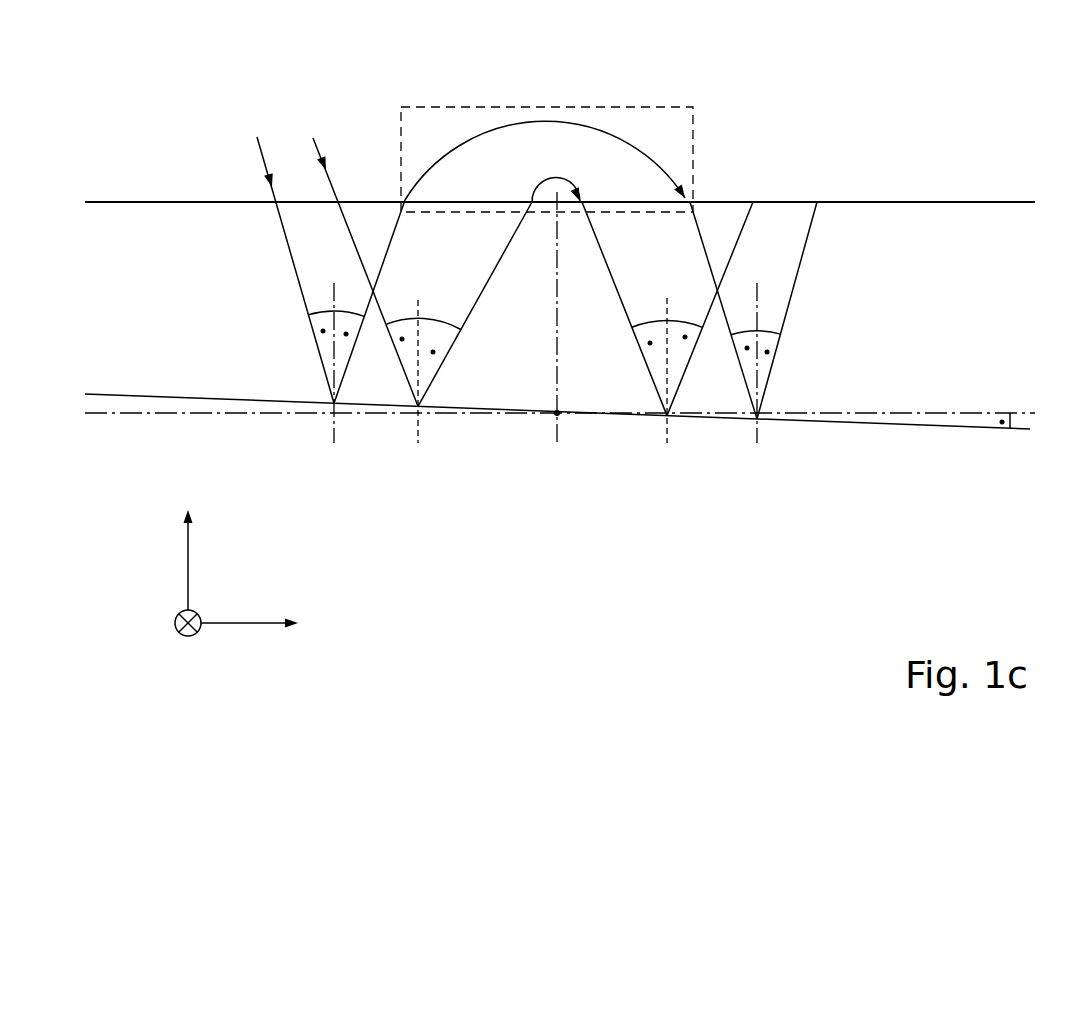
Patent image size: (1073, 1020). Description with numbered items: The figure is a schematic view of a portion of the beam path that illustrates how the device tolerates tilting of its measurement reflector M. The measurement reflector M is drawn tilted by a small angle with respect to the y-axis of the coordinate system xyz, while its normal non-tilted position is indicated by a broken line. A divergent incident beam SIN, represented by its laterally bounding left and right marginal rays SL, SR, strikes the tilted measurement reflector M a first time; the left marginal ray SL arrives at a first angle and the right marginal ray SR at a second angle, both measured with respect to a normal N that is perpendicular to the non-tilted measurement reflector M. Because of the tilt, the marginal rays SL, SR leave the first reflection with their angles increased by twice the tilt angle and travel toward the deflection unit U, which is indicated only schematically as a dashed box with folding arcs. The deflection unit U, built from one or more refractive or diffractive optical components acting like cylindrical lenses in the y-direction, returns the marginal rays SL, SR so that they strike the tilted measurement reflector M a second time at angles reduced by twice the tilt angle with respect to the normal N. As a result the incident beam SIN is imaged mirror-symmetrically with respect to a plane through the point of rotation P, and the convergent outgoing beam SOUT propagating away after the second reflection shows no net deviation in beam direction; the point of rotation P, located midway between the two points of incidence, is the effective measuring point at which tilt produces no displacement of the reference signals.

The measurement reflector M is at (880, 426).
The point of rotation P is at (562, 417).
The deflection unit U is at (652, 107).
The left marginal ray SL is at (746, 220).
The right marginal ray SR is at (317, 148).
The incident beam SIN is at (313, 238).
The outgoing beam SOUT is at (781, 258).
The normal N is at (333, 293).
The coordinate system xyz is at (236, 593).